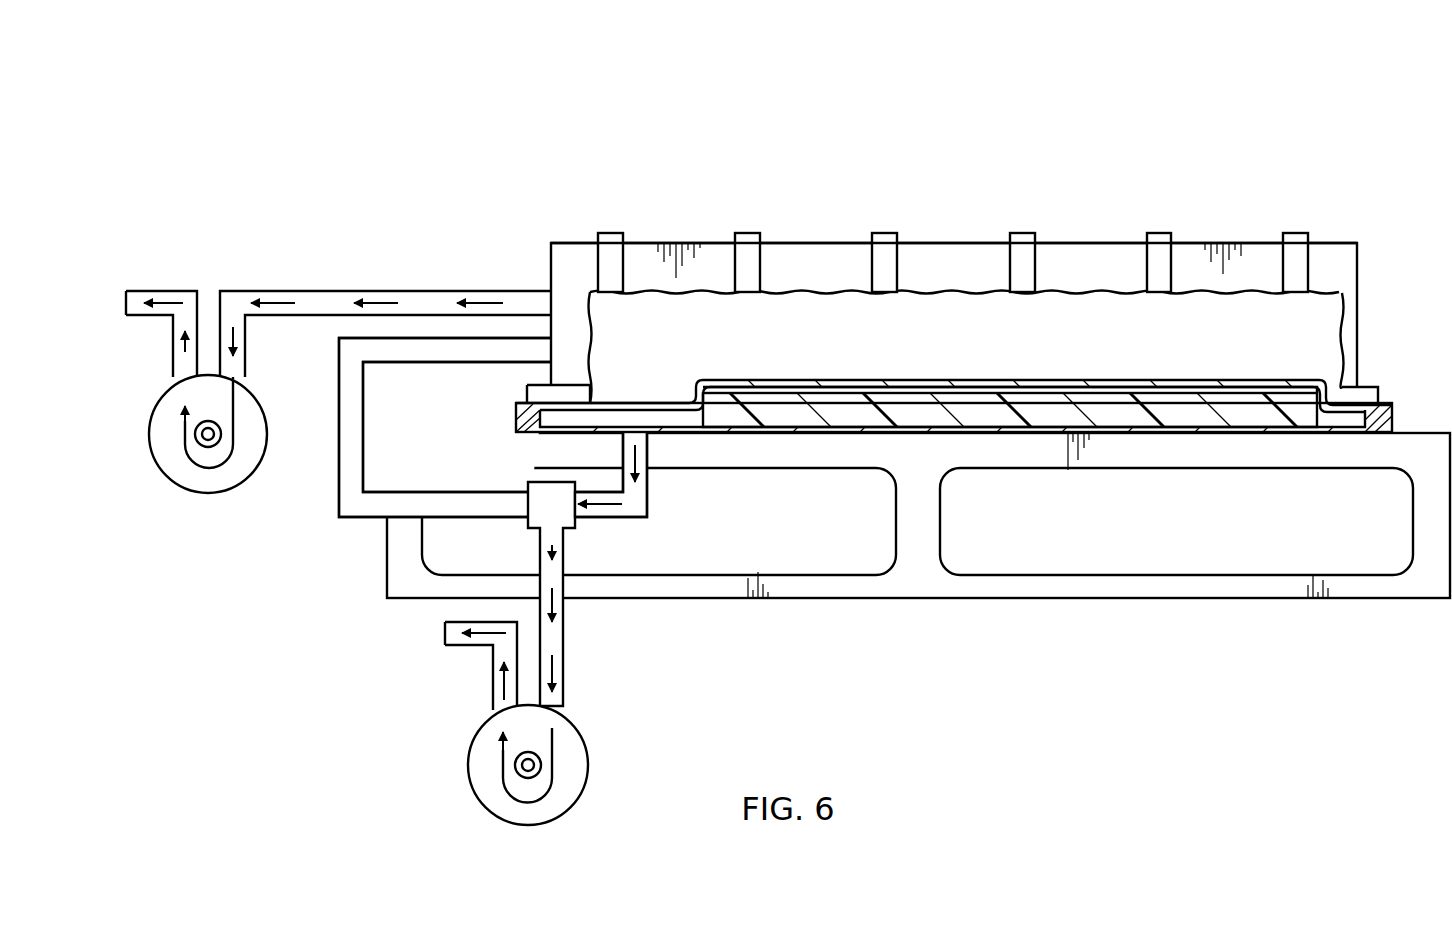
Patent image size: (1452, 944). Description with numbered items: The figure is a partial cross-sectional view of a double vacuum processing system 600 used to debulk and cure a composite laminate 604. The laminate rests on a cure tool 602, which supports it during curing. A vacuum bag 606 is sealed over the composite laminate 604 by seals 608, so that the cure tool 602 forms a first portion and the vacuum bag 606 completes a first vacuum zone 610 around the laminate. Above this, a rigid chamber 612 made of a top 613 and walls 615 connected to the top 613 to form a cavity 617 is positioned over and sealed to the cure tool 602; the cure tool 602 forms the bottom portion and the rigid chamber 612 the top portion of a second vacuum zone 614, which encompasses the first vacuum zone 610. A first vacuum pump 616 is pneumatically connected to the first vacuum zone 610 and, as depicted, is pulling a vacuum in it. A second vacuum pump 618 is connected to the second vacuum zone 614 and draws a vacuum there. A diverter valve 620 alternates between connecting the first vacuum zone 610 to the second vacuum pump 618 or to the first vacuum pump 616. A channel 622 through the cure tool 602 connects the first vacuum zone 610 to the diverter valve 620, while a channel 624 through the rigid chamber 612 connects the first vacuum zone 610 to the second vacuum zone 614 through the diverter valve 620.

The double vacuum processing system 600 is at (516, 136).
The cure tool 602 is at (1002, 602).
The composite laminate 604 is at (1105, 410).
The vacuum bag 606 is at (1045, 378).
The seals 608 is at (516, 417).
The first vacuum zone 610 is at (682, 418).
The rigid chamber 612 is at (1095, 240).
The top 613 is at (936, 243).
The second vacuum zone 614 is at (835, 323).
The walls 615 is at (1358, 292).
The first vacuum pump 616 is at (443, 766).
The cavity 617 is at (948, 315).
The second vacuum pump 618 is at (146, 494).
The diverter valve 620 is at (577, 522).
The channel 622 is at (650, 492).
The channel 624 is at (339, 378).